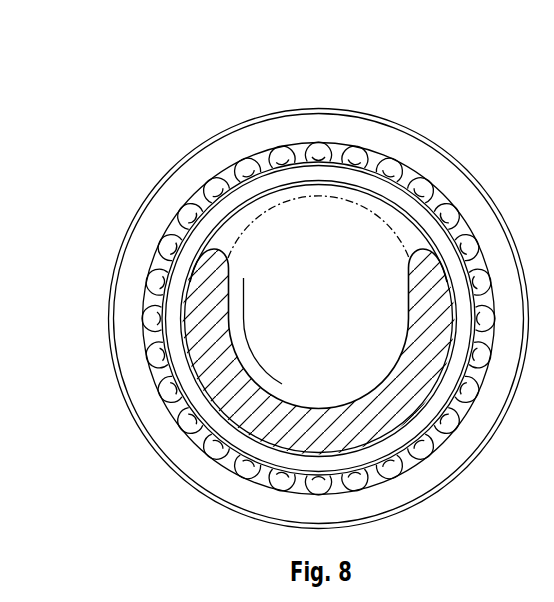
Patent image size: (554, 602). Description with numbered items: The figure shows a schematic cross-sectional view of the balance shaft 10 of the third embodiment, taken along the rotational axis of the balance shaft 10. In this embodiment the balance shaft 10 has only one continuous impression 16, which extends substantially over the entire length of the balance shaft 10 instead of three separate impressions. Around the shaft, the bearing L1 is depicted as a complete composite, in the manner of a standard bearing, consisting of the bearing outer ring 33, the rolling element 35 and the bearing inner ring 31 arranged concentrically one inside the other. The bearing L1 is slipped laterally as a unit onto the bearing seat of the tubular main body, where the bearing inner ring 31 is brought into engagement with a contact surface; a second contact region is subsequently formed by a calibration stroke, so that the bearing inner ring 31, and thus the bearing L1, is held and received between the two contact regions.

The balance shaft 10 is at (66, 85).
The bearing outer ring 33 is at (208, 161).
The bearing inner ring 31 is at (425, 159).
The rolling element 35 is at (364, 150).
The impression 16 is at (308, 293).
The bearing L1 is at (478, 457).